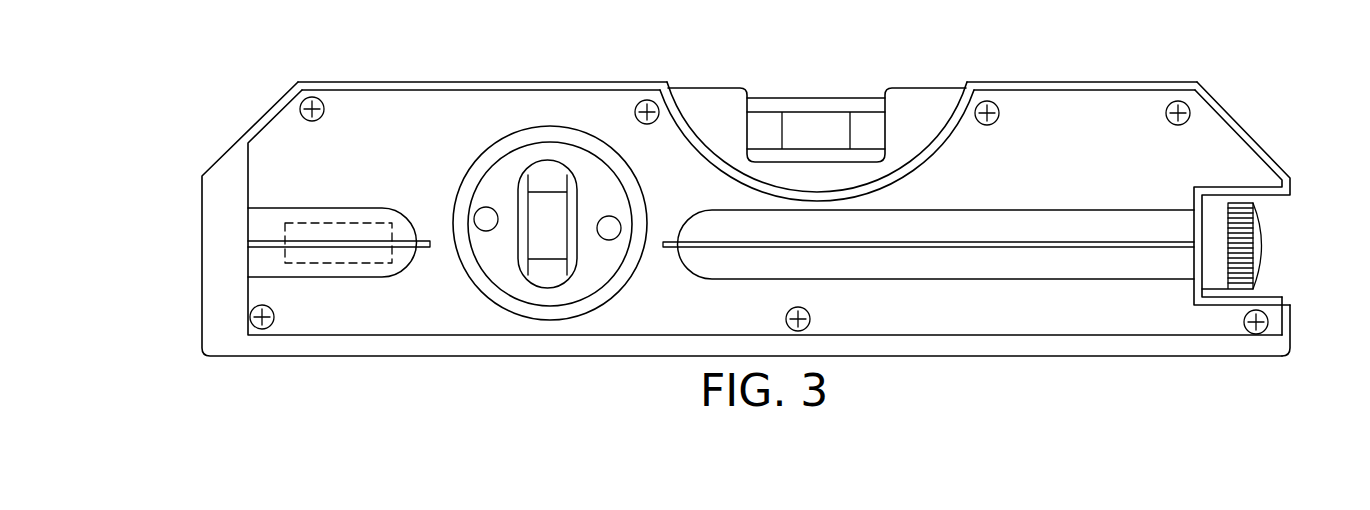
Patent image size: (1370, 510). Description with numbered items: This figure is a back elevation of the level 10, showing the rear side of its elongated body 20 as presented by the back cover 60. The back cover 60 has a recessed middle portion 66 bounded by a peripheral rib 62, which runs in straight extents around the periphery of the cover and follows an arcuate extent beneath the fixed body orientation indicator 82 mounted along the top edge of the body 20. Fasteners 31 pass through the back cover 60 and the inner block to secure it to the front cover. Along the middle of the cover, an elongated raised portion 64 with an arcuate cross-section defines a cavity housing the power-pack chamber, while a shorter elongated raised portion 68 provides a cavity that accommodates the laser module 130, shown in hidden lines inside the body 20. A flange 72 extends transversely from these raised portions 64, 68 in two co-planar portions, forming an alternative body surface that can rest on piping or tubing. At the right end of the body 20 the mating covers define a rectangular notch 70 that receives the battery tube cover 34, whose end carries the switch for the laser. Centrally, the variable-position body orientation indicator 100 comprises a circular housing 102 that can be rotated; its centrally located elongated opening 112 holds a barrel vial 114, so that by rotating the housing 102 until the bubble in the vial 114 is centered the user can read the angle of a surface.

The level 10 is at (220, 100).
The body 20 is at (328, 77).
The fasteners 31 is at (321, 118).
The battery tube cover 34 is at (1258, 240).
The back cover 60 is at (1230, 150).
The peripheral rib 62 is at (1116, 82).
The elongated raised portion 64 is at (1010, 268).
The recessed middle portion 66 is at (1098, 180).
The elongated raised portion 68 is at (373, 263).
The rectangular notch 70 is at (1273, 298).
The flange 72 is at (309, 243).
The fixed body orientation indicator 82 is at (815, 86).
The variable-position body orientation indicator 100 is at (494, 304).
The circular housing 102 is at (552, 297).
The elongated opening 112 is at (537, 170).
The barrel vial 114 is at (558, 249).
The laser module 130 is at (337, 265).